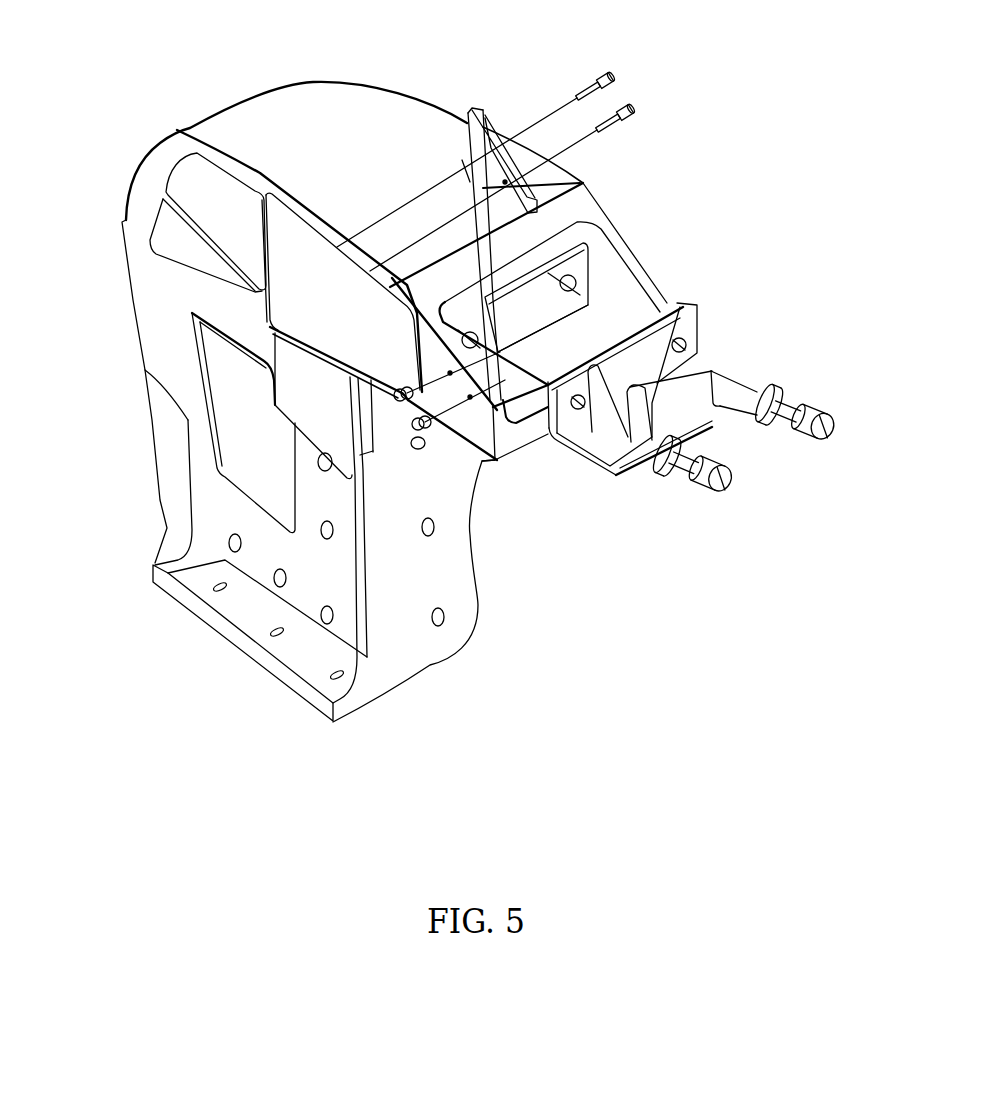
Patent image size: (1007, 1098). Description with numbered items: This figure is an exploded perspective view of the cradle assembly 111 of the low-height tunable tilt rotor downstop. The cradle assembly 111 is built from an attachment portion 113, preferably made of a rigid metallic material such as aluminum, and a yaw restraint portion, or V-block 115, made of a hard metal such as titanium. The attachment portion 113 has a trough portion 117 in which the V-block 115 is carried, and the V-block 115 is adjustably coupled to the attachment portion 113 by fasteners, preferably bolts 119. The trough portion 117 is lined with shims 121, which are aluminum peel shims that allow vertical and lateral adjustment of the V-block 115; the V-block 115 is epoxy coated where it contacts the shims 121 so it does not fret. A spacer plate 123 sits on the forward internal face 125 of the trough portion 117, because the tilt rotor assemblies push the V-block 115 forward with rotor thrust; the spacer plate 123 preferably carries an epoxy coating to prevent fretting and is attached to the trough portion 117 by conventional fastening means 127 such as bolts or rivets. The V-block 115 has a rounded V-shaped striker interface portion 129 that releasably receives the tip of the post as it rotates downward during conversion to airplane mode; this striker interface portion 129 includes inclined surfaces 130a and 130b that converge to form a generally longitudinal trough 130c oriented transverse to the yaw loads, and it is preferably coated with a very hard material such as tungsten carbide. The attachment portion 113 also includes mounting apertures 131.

The cradle assembly 111 is at (100, 147).
The attachment portion 113 is at (227, 103).
The V-block 115 is at (714, 429).
The trough portion 117 is at (608, 222).
The bolts 119 is at (803, 403).
The shims 121 is at (527, 308).
The spacer plate 123 is at (480, 106).
The forward internal face 125 is at (498, 430).
The fastening means 127 is at (600, 98).
The striker interface portion 129 is at (644, 356).
The inclined surface 130a is at (695, 352).
The inclined surface 130b is at (630, 440).
The longitudinal trough 130c is at (597, 400).
The mounting apertures 131 is at (213, 588).